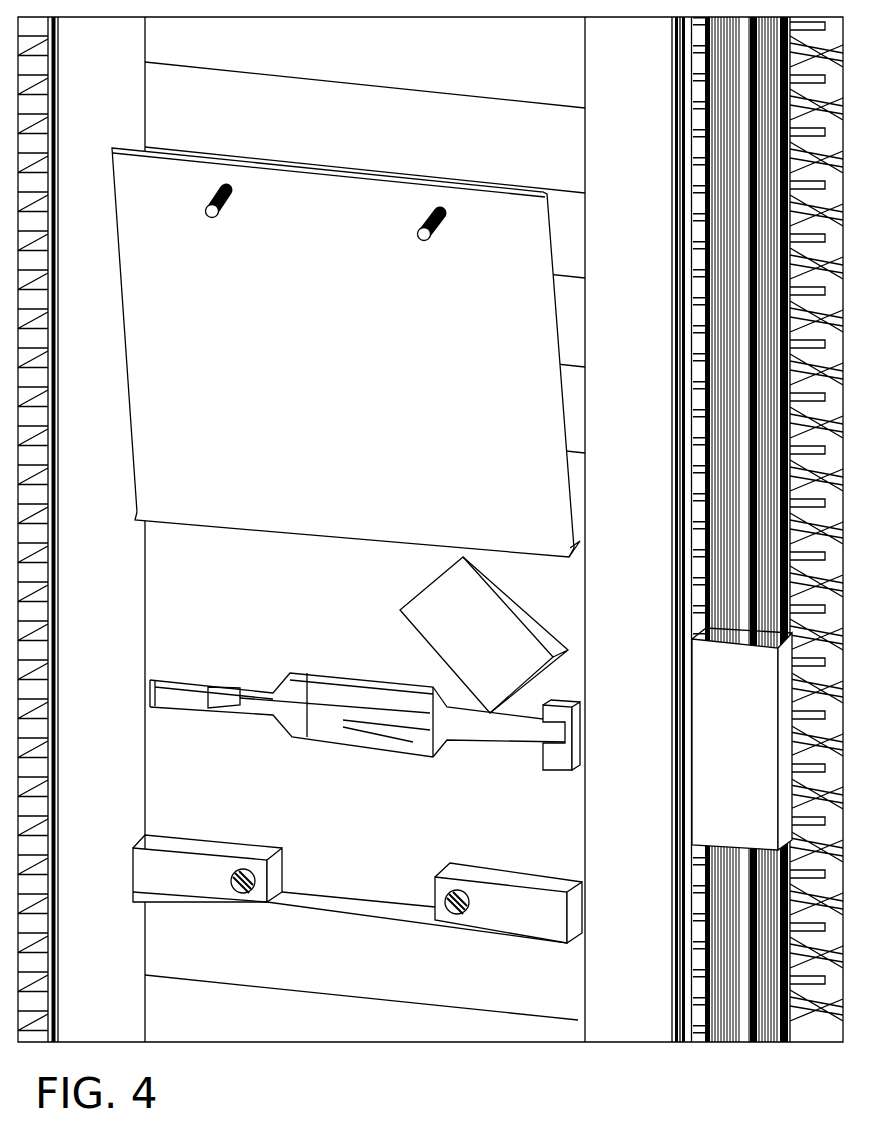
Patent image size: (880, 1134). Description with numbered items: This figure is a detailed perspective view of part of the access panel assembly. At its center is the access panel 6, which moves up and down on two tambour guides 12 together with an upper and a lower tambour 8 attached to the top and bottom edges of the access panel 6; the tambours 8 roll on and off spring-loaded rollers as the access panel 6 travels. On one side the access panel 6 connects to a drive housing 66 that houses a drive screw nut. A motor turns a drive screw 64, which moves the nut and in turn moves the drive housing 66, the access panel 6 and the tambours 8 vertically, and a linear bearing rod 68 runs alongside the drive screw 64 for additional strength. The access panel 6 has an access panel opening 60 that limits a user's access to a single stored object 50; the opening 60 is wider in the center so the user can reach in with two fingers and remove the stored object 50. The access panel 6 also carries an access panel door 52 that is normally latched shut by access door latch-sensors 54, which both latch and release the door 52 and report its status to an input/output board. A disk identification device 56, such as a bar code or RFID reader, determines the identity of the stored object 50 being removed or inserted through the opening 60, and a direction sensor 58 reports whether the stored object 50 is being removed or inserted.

The access panel 6 is at (349, 829).
The tambour 8 is at (370, 121).
The tambour guide 12 is at (102, 673).
The stored object 50 is at (358, 700).
The access panel door 52 is at (336, 338).
The access door latch-sensor 54 is at (519, 920).
The disk identification device 56 is at (478, 641).
The direction sensor 58 is at (557, 762).
The access panel opening 60 is at (194, 714).
The drive screw 64 is at (673, 351).
The drive housing 66 is at (742, 755).
The linear bearing rod 68 is at (673, 475).